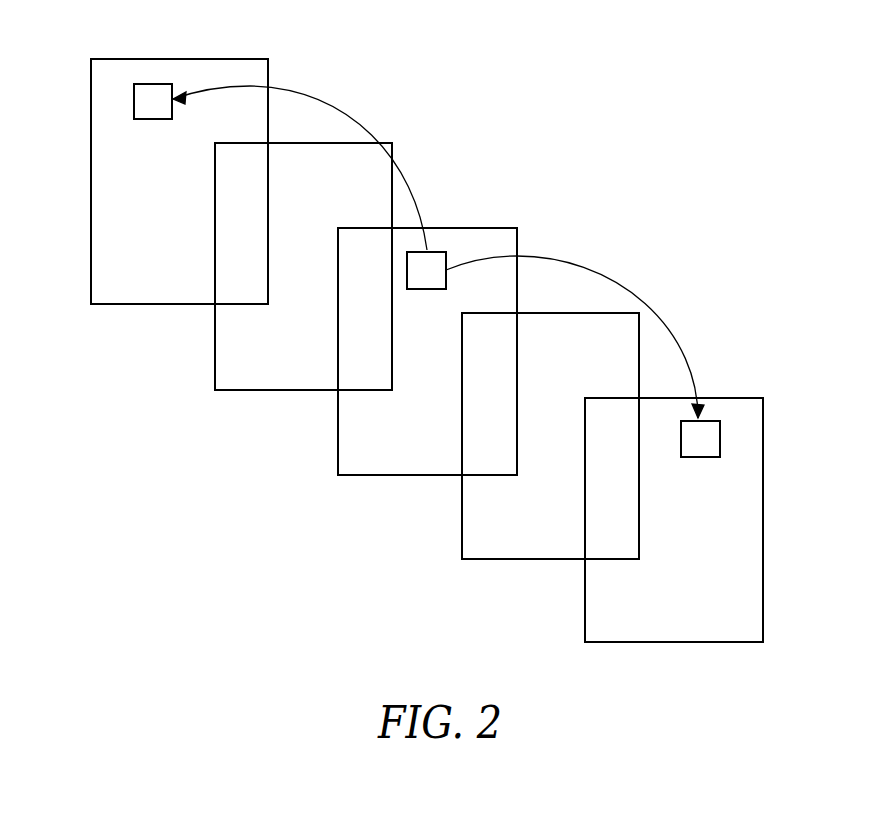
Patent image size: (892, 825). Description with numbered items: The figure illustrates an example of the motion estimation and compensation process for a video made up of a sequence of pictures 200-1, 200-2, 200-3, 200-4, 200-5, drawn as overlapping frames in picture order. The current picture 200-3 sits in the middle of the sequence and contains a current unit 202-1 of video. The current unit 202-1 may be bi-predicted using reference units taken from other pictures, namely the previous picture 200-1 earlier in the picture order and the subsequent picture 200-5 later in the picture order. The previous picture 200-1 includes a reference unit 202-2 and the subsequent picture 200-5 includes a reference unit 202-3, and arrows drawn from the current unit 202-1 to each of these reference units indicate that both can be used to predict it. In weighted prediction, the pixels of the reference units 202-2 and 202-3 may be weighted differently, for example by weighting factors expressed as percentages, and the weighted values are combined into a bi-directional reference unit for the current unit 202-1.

The previous picture 200-1 is at (155, 305).
The picture 200-2 is at (278, 391).
The current picture 200-3 is at (402, 476).
The picture 200-4 is at (523, 560).
The subsequent picture 200-5 is at (673, 643).
The current unit 202-1 is at (440, 252).
The reference unit 202-2 is at (153, 84).
The reference unit 202-3 is at (712, 421).